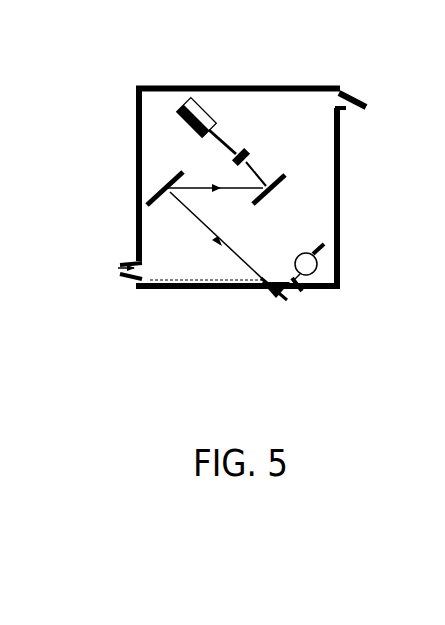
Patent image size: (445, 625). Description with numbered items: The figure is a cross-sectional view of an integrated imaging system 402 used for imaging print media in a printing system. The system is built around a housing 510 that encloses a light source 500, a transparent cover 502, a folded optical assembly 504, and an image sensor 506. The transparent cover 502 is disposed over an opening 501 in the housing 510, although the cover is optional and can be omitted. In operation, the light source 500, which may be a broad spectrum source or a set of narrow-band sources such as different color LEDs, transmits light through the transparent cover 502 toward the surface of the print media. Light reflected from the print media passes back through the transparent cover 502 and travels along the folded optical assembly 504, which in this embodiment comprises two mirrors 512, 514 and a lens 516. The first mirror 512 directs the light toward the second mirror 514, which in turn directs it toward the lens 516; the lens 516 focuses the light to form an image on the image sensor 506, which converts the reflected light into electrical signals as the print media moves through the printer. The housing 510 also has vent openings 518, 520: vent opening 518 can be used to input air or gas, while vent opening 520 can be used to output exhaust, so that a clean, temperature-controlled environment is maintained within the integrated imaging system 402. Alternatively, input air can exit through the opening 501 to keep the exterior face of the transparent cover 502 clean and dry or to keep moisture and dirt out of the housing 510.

The integrated imaging system 402 is at (248, 173).
The light source 500 is at (294, 256).
The opening 501 is at (316, 299).
The transparent cover 502 is at (254, 299).
The folded optical assembly 504 is at (205, 266).
The image sensor 506 is at (205, 107).
The housing 510 is at (264, 187).
The mirror 512 is at (164, 176).
The mirror 514 is at (281, 182).
The lens 516 is at (253, 154).
The vent opening 518 is at (373, 87).
The vent opening 520 is at (95, 258).